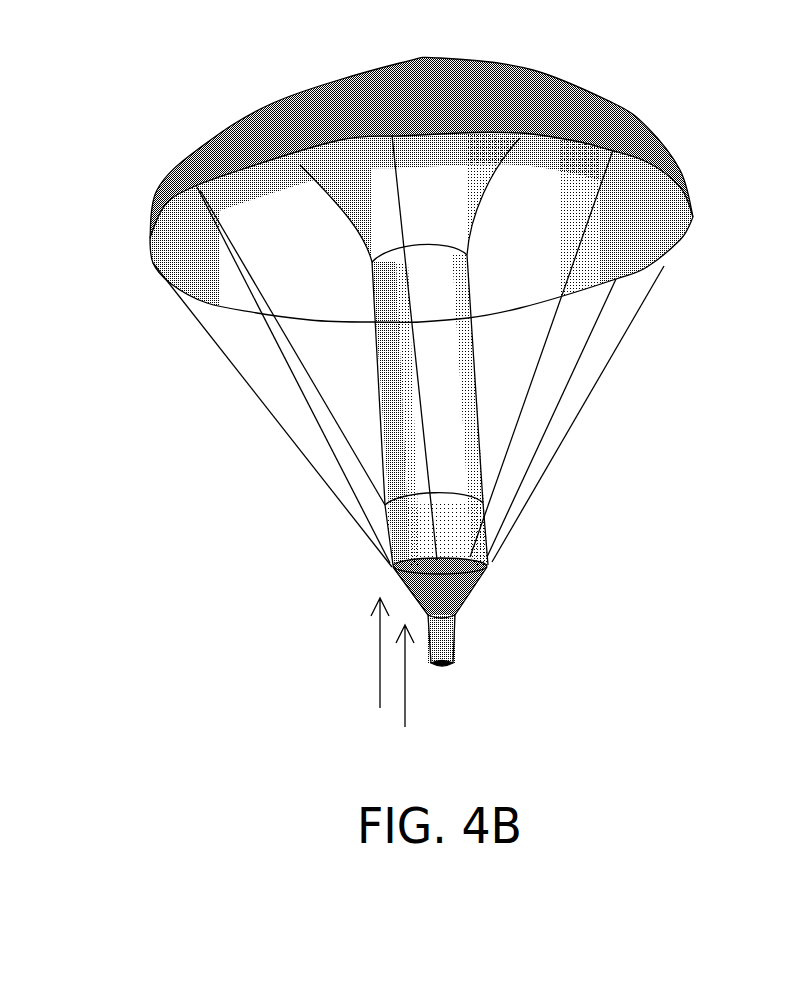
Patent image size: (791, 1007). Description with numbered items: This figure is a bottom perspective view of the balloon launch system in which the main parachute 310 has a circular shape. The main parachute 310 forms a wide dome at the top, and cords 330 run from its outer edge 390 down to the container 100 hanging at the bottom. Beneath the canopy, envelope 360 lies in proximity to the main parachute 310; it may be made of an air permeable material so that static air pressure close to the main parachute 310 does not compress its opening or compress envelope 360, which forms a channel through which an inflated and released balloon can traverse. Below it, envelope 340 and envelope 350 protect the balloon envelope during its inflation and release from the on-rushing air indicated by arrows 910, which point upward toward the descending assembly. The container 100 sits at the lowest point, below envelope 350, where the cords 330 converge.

The main parachute 310 is at (595, 118).
The outer edge 390 is at (692, 227).
The envelope 360 is at (388, 358).
The cords 330 is at (353, 460).
The envelope 340 is at (452, 523).
The envelope 350 is at (447, 588).
The container 100 is at (457, 667).
The arrows 910 is at (387, 675).